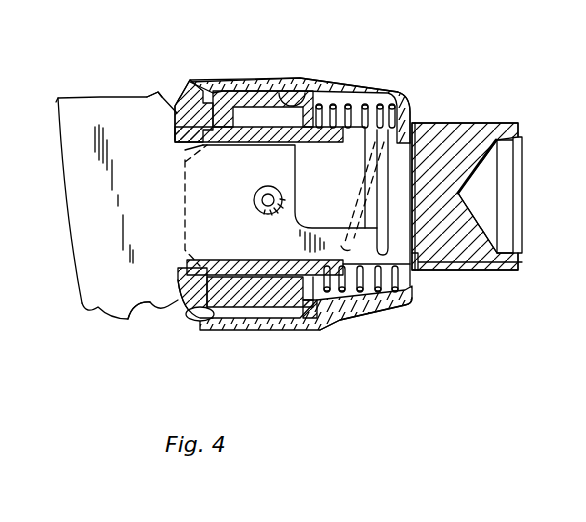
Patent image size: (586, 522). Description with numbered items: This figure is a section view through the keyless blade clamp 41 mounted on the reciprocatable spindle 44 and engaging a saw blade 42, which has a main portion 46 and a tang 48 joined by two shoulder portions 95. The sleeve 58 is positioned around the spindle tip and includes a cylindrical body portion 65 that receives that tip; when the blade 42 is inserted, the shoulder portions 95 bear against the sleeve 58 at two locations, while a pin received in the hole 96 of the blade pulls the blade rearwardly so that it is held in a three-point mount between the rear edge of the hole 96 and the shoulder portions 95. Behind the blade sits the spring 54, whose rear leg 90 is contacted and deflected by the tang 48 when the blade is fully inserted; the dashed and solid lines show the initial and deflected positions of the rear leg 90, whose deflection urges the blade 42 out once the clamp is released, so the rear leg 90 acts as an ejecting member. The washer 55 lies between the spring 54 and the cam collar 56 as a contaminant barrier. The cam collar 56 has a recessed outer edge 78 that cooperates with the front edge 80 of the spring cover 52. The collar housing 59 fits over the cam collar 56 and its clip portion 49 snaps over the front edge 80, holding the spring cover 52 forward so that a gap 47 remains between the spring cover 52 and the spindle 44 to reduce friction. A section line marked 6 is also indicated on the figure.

The section line 6 is at (570, 26).
The keyless blade clamp 41 is at (370, 318).
The saw blade 42 is at (96, 272).
The reciprocatable spindle 44 is at (488, 123).
The main portion 46 is at (89, 113).
The gap 47 is at (413, 270).
The tang 48 is at (238, 210).
The clip portion 49 is at (325, 327).
The spring cover 52 is at (398, 93).
The spring 54 is at (370, 97).
The washer 55 is at (284, 84).
The cam collar 56 is at (240, 317).
The sleeve 58 is at (176, 116).
The collar housing 59 is at (200, 322).
The cylindrical body portion 65 is at (244, 307).
The recessed outer edge 78 is at (292, 95).
The front edge 80 is at (311, 307).
The rear leg 90 is at (390, 228).
The shoulder portions 95 is at (148, 95).
The hole 96 is at (260, 188).